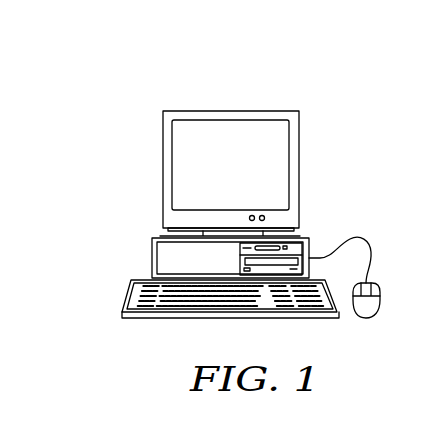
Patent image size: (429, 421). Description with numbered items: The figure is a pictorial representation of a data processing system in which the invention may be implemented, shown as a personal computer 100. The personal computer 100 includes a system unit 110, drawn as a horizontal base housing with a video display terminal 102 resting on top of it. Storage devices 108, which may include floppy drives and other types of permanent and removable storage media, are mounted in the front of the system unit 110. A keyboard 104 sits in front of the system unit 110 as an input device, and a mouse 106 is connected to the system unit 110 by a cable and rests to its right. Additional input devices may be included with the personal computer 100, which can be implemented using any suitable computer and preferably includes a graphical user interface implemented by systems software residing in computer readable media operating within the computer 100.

The personal computer 100 is at (252, 84).
The video display terminal 102 is at (178, 167).
The keyboard 104 is at (147, 298).
The mouse 106 is at (366, 318).
The storage devices 108 is at (284, 250).
The system unit 110 is at (152, 258).